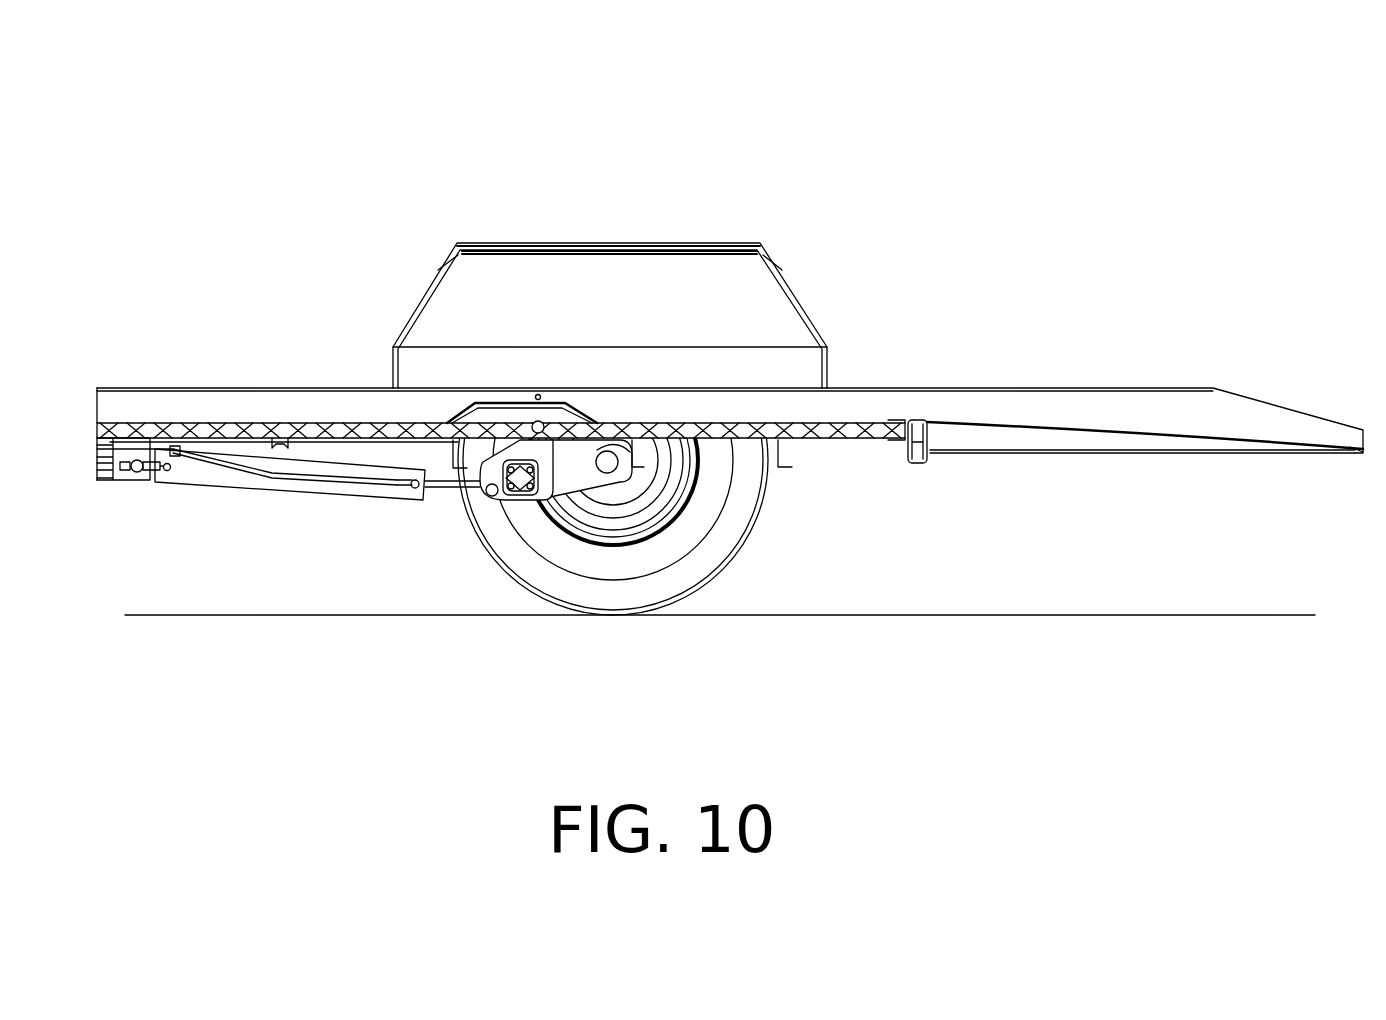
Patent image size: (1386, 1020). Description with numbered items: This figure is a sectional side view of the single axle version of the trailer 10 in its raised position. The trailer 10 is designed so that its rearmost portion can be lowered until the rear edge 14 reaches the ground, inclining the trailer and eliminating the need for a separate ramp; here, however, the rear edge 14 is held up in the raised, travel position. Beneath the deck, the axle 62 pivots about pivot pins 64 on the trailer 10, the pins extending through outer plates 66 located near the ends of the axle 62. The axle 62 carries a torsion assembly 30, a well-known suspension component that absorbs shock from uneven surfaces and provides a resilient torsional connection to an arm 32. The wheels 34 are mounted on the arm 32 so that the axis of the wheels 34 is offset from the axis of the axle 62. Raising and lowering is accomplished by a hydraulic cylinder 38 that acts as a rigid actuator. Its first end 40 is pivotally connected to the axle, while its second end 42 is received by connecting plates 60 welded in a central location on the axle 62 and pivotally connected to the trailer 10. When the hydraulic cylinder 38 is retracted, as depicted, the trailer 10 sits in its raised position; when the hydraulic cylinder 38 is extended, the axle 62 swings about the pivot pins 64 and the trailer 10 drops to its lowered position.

The trailer 10 is at (517, 197).
The rear edge 14 is at (1363, 430).
The torsion assembly 30 is at (565, 478).
The arm 32 is at (655, 545).
The wheels 34 is at (762, 508).
The hydraulic cylinder 38 is at (262, 497).
The first end 40 is at (137, 472).
The second end 42 is at (540, 498).
The connecting plates 60 is at (485, 490).
The axle 62 is at (503, 465).
The pivot pins 64 is at (538, 427).
The outer plates 66 is at (550, 440).